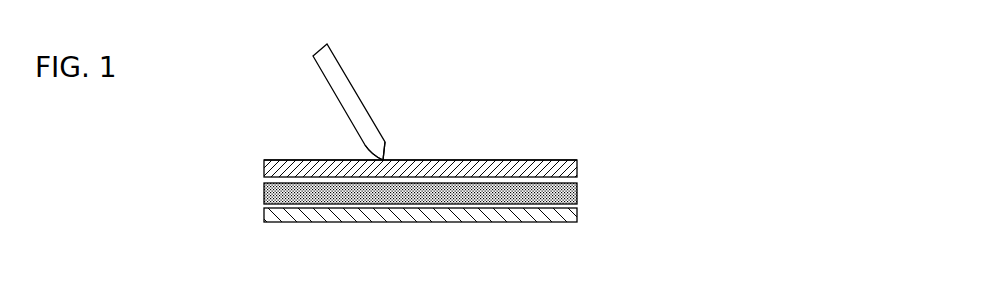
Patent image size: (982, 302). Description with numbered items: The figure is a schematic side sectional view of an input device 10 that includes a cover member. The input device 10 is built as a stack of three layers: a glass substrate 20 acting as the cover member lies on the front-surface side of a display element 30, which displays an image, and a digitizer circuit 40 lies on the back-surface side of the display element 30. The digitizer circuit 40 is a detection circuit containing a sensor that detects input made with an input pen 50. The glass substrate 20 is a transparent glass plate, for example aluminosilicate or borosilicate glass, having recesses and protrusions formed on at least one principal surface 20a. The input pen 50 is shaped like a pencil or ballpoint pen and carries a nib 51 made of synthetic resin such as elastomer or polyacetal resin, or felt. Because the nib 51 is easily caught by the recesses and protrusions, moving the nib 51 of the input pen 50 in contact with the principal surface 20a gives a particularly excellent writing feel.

The input device 10 is at (524, 96).
The glass substrate 20 is at (578, 166).
The principal surface 20a is at (541, 159).
The display element 30 is at (578, 190).
The digitizer circuit 40 is at (578, 215).
The input pen 50 is at (342, 67).
The nib 51 is at (387, 152).